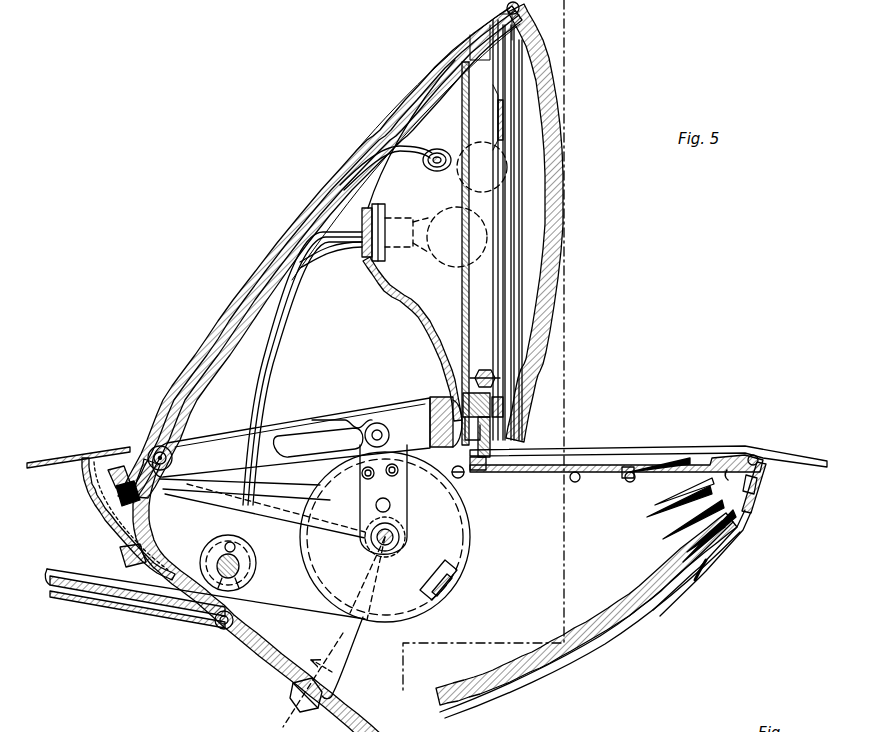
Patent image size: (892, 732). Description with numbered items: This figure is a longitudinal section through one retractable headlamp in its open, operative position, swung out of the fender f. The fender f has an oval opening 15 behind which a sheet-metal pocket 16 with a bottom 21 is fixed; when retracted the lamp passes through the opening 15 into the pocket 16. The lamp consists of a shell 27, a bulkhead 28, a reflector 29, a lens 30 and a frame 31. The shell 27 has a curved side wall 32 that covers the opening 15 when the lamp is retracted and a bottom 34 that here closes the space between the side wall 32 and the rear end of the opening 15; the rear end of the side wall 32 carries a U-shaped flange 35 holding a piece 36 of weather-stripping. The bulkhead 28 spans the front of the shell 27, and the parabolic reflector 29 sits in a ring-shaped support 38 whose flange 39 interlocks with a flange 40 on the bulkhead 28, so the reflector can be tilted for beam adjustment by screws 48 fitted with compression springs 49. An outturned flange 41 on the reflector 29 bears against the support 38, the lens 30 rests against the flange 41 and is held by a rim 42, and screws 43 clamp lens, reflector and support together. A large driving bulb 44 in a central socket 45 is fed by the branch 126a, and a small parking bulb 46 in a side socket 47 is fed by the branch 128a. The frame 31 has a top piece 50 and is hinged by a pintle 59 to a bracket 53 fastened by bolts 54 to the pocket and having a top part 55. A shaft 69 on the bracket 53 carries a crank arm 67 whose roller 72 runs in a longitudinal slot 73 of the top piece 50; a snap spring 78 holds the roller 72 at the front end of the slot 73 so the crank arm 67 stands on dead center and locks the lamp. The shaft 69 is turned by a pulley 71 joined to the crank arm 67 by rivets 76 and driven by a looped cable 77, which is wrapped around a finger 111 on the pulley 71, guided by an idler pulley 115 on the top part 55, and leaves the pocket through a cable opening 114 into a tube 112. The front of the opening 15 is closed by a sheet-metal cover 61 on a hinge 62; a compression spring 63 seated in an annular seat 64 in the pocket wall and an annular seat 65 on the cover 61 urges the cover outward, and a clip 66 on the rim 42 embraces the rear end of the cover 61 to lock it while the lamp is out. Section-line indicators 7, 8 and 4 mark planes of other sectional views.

The section line 7- 7 is at (553, 12).
The section line 8- 8 is at (357, 393).
The section line 4- 4 is at (312, 722).
The fender f is at (42, 441).
The opening 15 is at (108, 458).
The pocket 16 is at (603, 650).
The bottom 21 is at (603, 584).
The shell 27 is at (250, 300).
The bulkhead 28 is at (456, 60).
The reflector 29 is at (412, 326).
The lens 30 is at (556, 143).
The frame 31 is at (283, 418).
The side wall 32 is at (300, 232).
The bottom 34 is at (420, 88).
The U-shaped flange 35 is at (122, 512).
The piece of weather-stripping 36 is at (100, 497).
The ring-shaped support 38 is at (500, 64).
The flange 39 is at (509, 6).
The flange 40 is at (490, 32).
The outturned flange 41 is at (510, 78).
The rim 42 is at (522, 22).
The screws 43 is at (496, 379).
The large electric bulb 44 is at (452, 266).
The socket 45 is at (372, 257).
The small electric bulb 46 is at (503, 192).
The socket 47 is at (437, 172).
The screws 48 is at (503, 418).
The compression springs 49 is at (482, 422).
The top piece 50 is at (222, 440).
The bracket 53 is at (338, 666).
The bolts 54 is at (293, 691).
The top part 55 is at (325, 631).
The pintle 59 is at (153, 447).
The cover 61 is at (548, 472).
The hinge 62 is at (761, 466).
The compression spring 63 is at (645, 517).
The annular seat 64 is at (700, 576).
The annular seat 65 is at (634, 470).
The clip 66 is at (476, 472).
The crank arm 67 is at (400, 497).
The shaft 69 is at (393, 549).
The pulley 71 is at (462, 546).
The roller 72 is at (390, 421).
The longitudinal slot 73 is at (300, 433).
The rivets 76 is at (362, 490).
The cable 77 is at (292, 548).
The snap springs 78 is at (344, 418).
The finger 111 is at (494, 601).
The tube 112 is at (97, 626).
The cable opening 114 is at (185, 592).
The idler pulley 115 is at (213, 538).
The branch 126a is at (280, 318).
The branch 128a is at (356, 176).